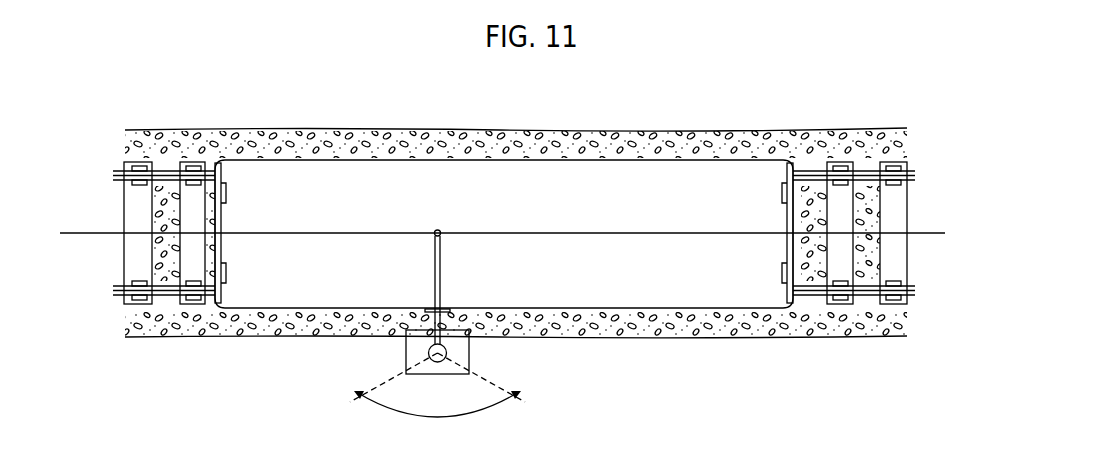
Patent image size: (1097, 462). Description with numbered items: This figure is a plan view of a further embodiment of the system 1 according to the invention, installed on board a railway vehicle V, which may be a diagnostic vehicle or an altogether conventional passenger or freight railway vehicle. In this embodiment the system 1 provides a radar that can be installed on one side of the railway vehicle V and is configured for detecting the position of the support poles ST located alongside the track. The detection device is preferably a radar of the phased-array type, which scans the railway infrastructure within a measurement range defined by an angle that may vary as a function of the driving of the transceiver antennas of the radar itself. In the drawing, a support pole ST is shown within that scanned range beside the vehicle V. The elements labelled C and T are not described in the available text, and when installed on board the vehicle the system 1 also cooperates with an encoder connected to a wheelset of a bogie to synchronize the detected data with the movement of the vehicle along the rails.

The railway vehicle V is at (712, 158).
The center line C is at (599, 231).
The system 1 is at (446, 303).
The support poles ST is at (446, 355).
The tunnel / soil T is at (780, 336).